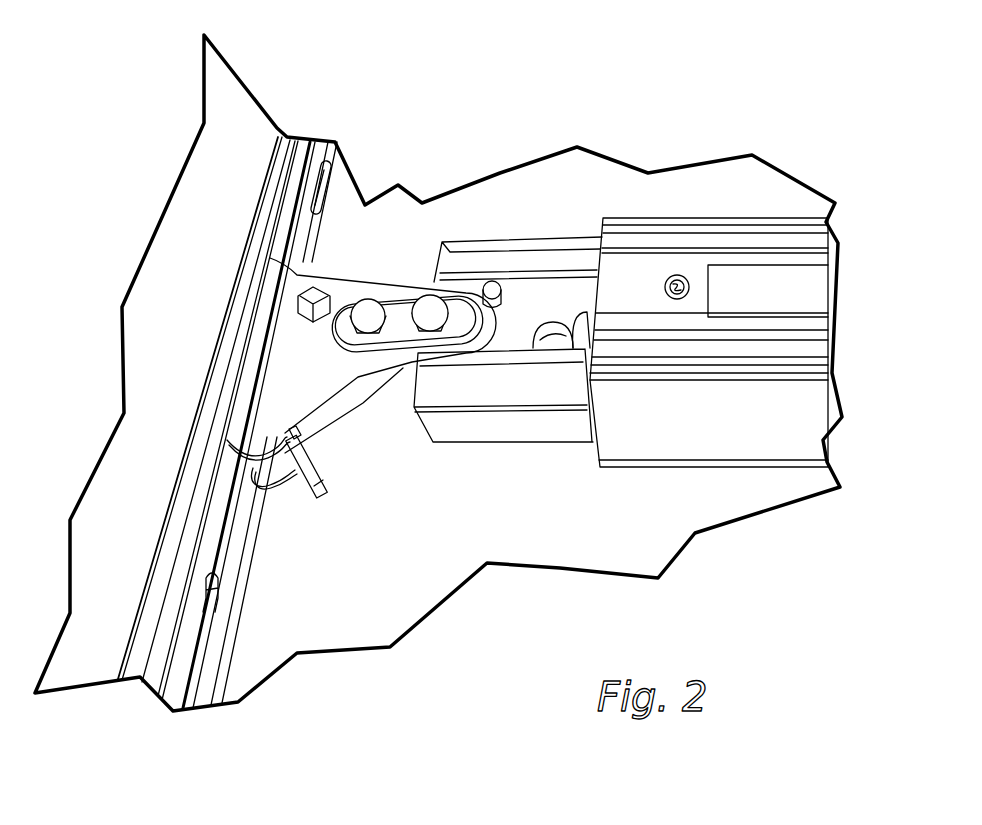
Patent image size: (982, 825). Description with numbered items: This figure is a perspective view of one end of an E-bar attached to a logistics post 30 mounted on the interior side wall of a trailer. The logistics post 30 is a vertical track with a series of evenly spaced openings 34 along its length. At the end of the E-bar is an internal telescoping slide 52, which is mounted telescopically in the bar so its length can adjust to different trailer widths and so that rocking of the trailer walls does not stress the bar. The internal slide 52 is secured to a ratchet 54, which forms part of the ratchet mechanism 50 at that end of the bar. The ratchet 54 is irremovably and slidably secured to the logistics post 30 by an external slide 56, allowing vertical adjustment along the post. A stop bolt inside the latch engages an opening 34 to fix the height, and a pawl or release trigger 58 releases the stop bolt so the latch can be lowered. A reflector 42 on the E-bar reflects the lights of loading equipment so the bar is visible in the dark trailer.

The logistics post 30 is at (210, 422).
The opening 34 is at (327, 165).
The reflector 42 is at (763, 297).
The ratchet mechanism 50 is at (538, 210).
The internal telescoping slide 52 is at (488, 393).
The ratchet 54 is at (313, 377).
The external slide 56 is at (252, 395).
The release trigger 58 is at (308, 472).